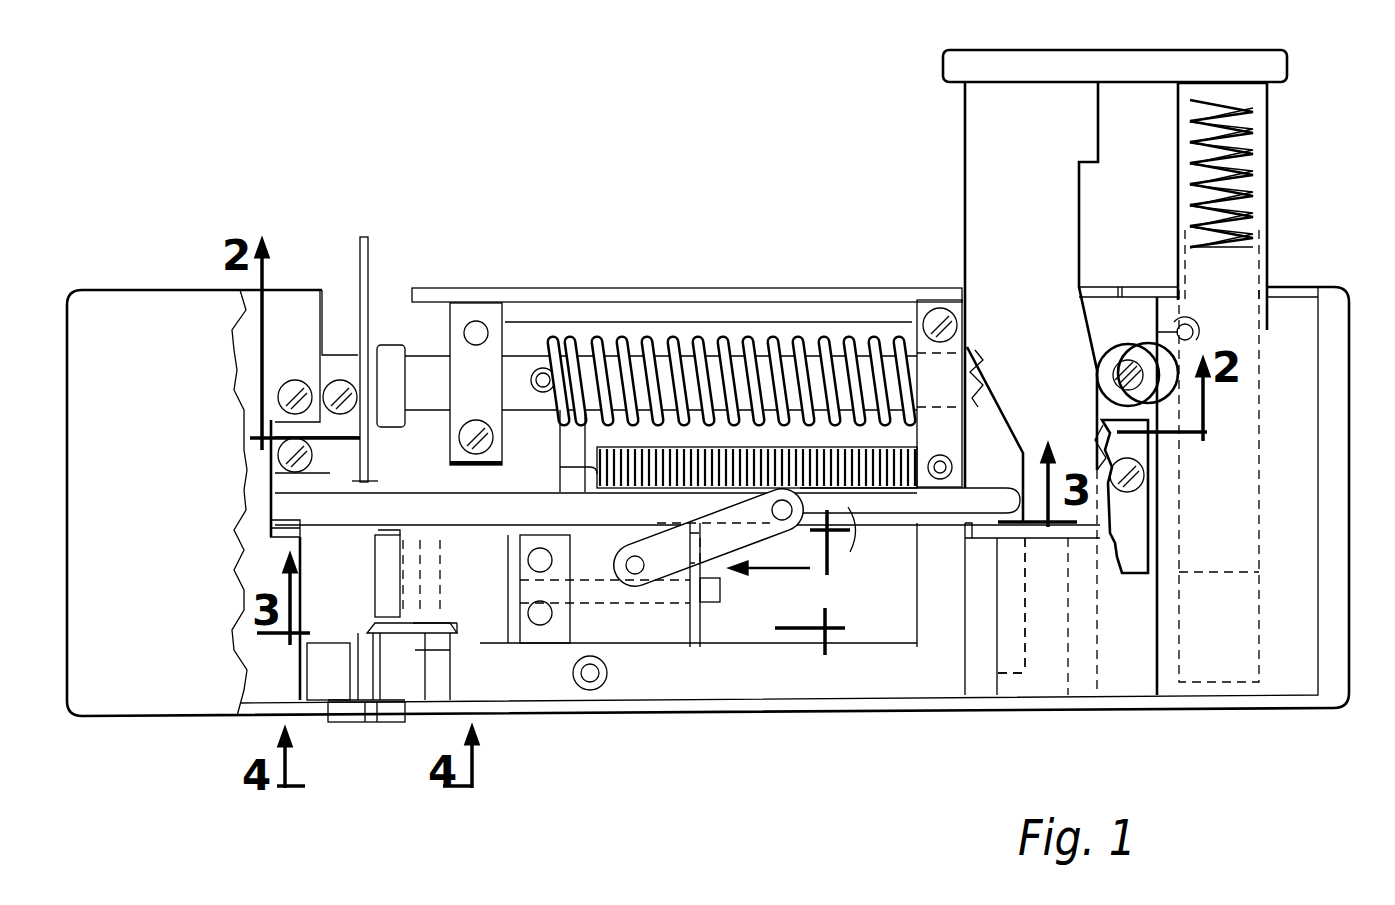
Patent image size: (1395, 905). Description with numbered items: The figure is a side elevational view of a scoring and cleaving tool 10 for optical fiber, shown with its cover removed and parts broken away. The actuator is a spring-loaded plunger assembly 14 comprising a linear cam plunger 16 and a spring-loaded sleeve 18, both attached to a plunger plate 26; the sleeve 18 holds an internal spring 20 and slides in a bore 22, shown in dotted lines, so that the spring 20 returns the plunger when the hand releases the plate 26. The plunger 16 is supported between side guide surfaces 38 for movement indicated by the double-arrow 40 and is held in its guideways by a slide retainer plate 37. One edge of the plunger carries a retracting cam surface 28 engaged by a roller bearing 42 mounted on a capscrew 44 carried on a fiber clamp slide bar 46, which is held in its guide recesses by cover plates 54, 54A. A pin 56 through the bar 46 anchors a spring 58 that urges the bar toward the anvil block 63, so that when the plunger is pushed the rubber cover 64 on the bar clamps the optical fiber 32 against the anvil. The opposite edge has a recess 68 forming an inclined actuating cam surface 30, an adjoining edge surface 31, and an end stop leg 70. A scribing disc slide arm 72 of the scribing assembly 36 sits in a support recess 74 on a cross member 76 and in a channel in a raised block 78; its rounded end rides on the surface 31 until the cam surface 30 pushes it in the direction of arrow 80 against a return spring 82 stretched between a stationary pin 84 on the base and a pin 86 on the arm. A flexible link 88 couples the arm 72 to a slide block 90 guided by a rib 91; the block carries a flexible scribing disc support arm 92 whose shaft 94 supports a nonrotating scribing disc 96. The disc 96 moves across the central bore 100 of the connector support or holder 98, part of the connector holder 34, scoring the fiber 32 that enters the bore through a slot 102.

The scoring and cleaving tool 10 is at (612, 250).
The spring-loaded plunger assembly 14 is at (925, 60).
The linear cam plunger 16 is at (1078, 190).
The spring-loaded sleeve 18 is at (1270, 155).
The internal spring 20 is at (1258, 125).
The bore 22 is at (1263, 515).
The plunger plate 26 is at (1025, 62).
The retracting cam surface 28 is at (1080, 315).
The actuating cam surface 30 is at (1003, 428).
The edge surface 31 is at (1018, 470).
The optical fiber 32 is at (358, 243).
The connector holder 34 is at (395, 745).
The fiber scoring or scribing assembly 36 is at (495, 630).
The slide retainer plate 37 is at (1136, 563).
The side guide surfaces 38 is at (965, 588).
The double-arrow 40 is at (927, 168).
The roller bearing 42 is at (1140, 345).
The capscrew 44 is at (1142, 392).
The fiber clamp slide bar 46 is at (635, 335).
The cover plate 54 is at (925, 300).
The cover plate 54A is at (468, 385).
The pin 56 is at (538, 372).
The spring 58 is at (770, 340).
The anvil block 63 is at (372, 427).
The rubber cover 64 is at (387, 350).
The recess 68 is at (963, 527).
The end stop leg 70 is at (982, 533).
The scribing disc slide arm 72 is at (836, 552).
The support recess 74 is at (873, 550).
The cross member 76 is at (920, 608).
The raised block 78 is at (280, 540).
The arrow 80 is at (757, 578).
The return spring 82 is at (585, 447).
The pin 84 is at (850, 552).
The pin 86 is at (560, 467).
The flexible link 88 is at (697, 565).
The slide block 90 is at (635, 625).
The rib 91 is at (722, 590).
The scribing disc support arm 92 is at (472, 600).
The shaft 94 is at (378, 568).
The scribing disc 96 is at (440, 650).
The connector support or holder 98 is at (318, 652).
The central bore 100 is at (325, 703).
The slot 102 is at (368, 715).